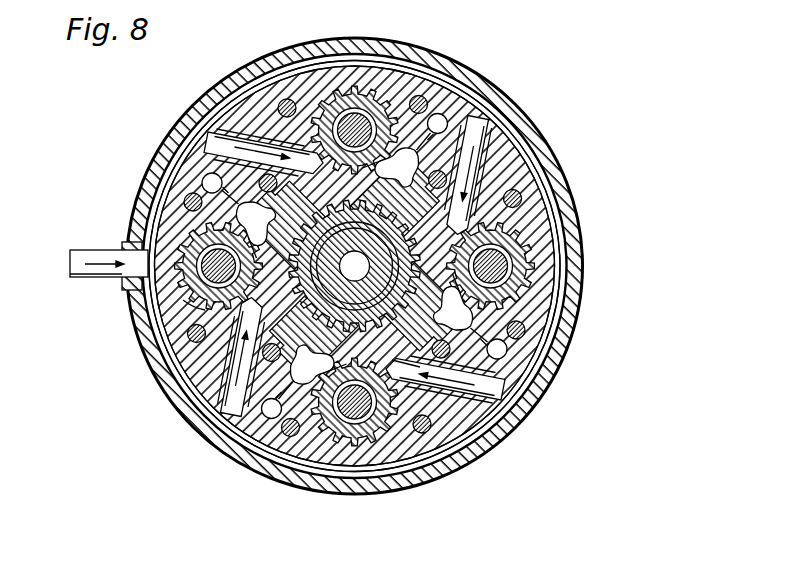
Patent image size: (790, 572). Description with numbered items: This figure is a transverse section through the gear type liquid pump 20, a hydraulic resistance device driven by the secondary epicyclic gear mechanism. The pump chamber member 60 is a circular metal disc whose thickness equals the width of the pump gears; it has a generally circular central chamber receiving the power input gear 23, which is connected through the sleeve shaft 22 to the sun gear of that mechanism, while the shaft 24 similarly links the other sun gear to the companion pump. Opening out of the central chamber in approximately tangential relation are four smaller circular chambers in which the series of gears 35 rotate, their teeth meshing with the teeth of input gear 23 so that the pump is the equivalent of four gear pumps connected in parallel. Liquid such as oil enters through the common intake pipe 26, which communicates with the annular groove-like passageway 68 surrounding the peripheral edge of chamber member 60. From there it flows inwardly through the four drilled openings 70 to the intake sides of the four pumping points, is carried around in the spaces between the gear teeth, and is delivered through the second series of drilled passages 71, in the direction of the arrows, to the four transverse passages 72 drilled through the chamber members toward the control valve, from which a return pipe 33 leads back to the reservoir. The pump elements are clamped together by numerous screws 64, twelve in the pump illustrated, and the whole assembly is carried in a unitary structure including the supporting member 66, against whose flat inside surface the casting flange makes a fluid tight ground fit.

The gear type liquid pump 20 is at (483, 92).
The sleeve shaft 22 is at (520, 304).
The power input gear 23 is at (522, 175).
The shaft 24 is at (183, 300).
The intake pipe 26 is at (82, 256).
The return pipe 33 is at (407, 365).
The gears 35 is at (347, 92).
The pump chamber member 60 is at (247, 108).
The screws 64 is at (273, 175).
The supporting member 66 is at (528, 163).
The annular groove-like passageway 68 is at (178, 162).
The inwardly directed drilled openings 70 is at (230, 138).
The drilled passages 71 is at (354, 266).
The transverse passages 72 is at (444, 118).